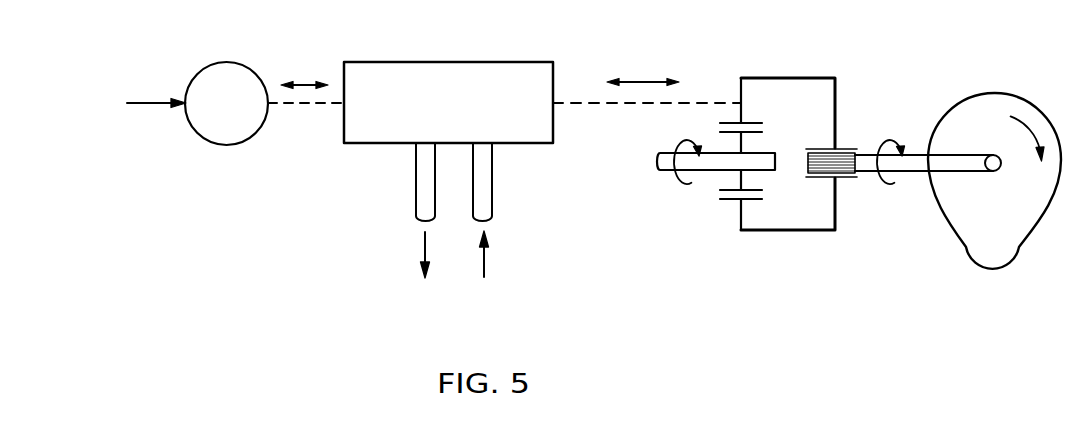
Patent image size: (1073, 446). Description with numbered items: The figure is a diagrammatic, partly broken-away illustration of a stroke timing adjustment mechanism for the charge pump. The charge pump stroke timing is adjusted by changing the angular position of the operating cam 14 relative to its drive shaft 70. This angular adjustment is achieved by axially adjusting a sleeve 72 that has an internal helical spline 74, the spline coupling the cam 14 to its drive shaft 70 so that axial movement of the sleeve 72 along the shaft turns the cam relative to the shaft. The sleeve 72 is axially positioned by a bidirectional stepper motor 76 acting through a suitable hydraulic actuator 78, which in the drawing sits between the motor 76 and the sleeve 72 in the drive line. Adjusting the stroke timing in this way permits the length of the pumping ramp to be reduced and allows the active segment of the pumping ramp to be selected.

The operating cam 14 is at (1002, 220).
The drive shaft 70 is at (718, 165).
The sleeve 72 is at (777, 240).
The internal helical spline 74 is at (732, 200).
The bidirectional stepper motor 76 is at (245, 77).
The hydraulic actuator 78 is at (350, 126).